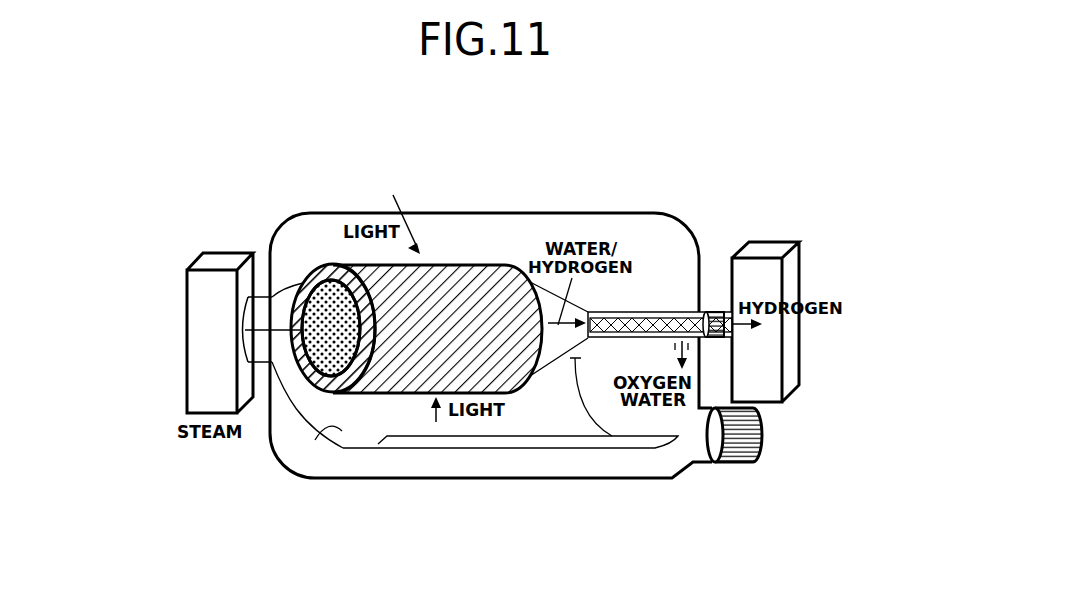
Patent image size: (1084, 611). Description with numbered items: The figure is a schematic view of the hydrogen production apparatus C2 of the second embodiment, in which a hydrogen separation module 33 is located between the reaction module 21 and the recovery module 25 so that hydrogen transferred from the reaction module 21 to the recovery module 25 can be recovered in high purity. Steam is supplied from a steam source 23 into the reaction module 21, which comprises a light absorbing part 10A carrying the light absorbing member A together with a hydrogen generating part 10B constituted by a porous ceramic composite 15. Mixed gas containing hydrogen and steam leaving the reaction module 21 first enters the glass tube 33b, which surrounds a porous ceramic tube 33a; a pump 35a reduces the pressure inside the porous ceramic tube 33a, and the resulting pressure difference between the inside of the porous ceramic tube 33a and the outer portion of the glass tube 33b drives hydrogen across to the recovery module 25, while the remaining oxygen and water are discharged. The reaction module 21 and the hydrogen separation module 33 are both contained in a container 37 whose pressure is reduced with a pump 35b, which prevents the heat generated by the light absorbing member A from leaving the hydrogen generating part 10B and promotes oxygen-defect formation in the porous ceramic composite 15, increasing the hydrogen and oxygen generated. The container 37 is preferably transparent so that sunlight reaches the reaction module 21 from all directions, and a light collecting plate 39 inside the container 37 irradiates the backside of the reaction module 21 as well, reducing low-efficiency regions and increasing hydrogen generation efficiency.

The reaction module 21 is at (372, 249).
The light absorbing part 10A is at (416, 273).
The light absorbing member A is at (331, 264).
The hydrogen generating part 10B is at (282, 264).
The porous ceramic composite 15 is at (320, 300).
The container 37 is at (498, 213).
The steam supply unit 23 is at (198, 344).
The recovery module 25 is at (790, 268).
The hydrogen separation module 33 is at (672, 232).
The porous ceramic tube 33a is at (638, 318).
The glass tube 33b is at (665, 318).
The pump 35a is at (713, 312).
The pump 35b is at (742, 458).
The light collecting plate 39 is at (316, 440).
The hydrogen production apparatus C2 is at (710, 118).